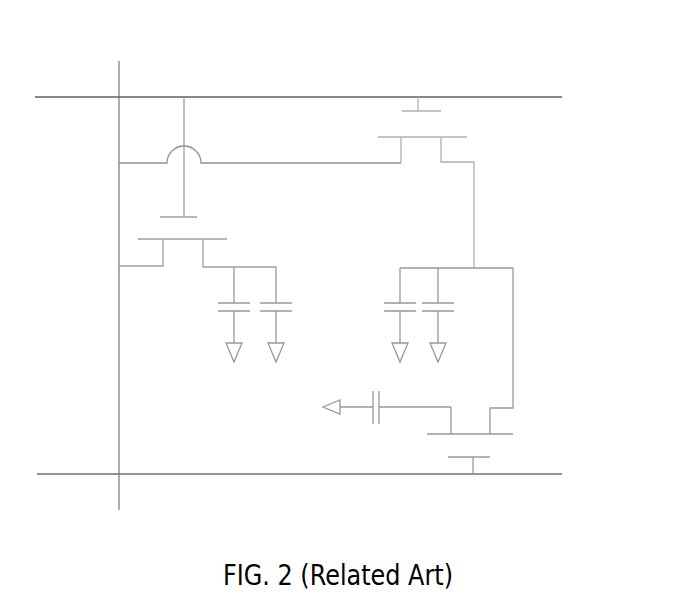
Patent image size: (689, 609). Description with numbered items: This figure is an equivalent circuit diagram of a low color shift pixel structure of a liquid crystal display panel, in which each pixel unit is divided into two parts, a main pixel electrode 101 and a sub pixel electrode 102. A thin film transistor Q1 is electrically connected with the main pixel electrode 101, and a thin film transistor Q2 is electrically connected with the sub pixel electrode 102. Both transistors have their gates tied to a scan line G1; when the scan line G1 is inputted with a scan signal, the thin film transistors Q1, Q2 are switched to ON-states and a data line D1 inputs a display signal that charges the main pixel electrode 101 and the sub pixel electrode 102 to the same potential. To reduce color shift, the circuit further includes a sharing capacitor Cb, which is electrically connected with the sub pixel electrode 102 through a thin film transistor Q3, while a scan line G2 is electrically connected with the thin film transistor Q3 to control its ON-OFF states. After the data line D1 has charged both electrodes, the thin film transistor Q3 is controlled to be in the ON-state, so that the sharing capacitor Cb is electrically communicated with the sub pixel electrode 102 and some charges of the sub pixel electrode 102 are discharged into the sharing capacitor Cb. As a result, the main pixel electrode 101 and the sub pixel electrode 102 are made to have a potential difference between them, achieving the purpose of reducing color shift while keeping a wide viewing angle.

The data line D1 is at (119, 61).
The scan line G1 is at (522, 97).
The scan line G2 is at (538, 474).
The thin film transistor Q1 is at (197, 182).
The thin film transistor Q2 is at (440, 182).
The thin film transistor Q3 is at (454, 371).
The main pixel electrode 101 is at (255, 267).
The sub pixel electrode 102 is at (447, 268).
The sharing capacitor Cb is at (387, 396).